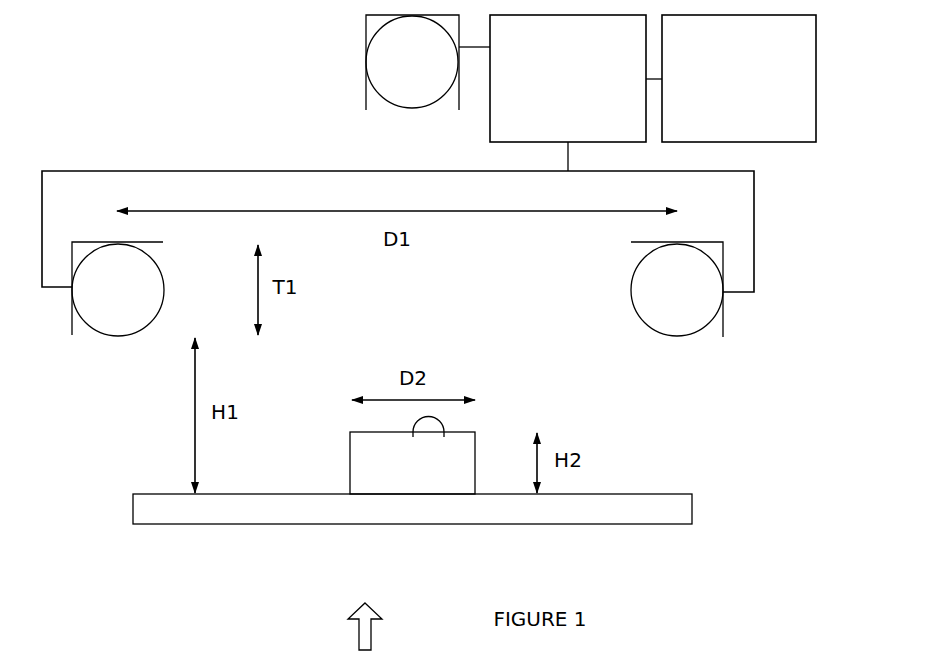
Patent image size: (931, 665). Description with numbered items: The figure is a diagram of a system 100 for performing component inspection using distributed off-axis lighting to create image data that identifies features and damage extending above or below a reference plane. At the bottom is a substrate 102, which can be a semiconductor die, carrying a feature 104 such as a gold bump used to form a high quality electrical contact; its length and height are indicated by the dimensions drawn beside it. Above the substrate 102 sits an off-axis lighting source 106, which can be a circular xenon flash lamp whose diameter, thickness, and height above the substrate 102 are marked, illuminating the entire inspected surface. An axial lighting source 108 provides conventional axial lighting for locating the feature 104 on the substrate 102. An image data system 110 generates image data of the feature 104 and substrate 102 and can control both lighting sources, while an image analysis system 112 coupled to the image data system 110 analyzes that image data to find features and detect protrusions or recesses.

The system for performing component inspection 100 is at (344, 626).
The substrate 102 is at (397, 521).
The feature 104 is at (397, 475).
The off-axis lighting source 106 is at (102, 301).
The axial lighting source 108 is at (396, 74).
The image data system 110 is at (551, 116).
The image analysis system 112 is at (722, 129).